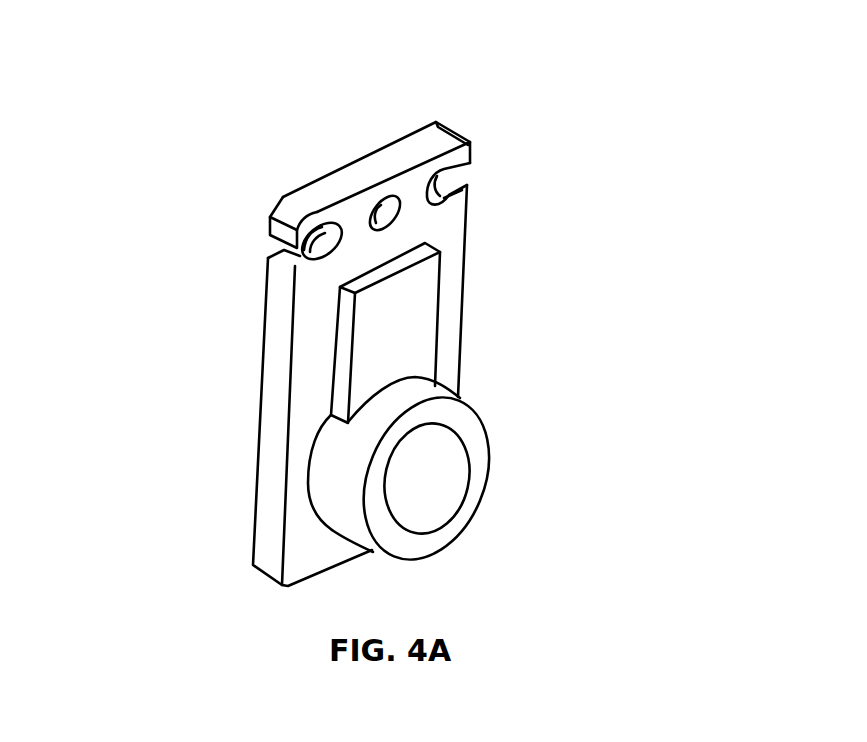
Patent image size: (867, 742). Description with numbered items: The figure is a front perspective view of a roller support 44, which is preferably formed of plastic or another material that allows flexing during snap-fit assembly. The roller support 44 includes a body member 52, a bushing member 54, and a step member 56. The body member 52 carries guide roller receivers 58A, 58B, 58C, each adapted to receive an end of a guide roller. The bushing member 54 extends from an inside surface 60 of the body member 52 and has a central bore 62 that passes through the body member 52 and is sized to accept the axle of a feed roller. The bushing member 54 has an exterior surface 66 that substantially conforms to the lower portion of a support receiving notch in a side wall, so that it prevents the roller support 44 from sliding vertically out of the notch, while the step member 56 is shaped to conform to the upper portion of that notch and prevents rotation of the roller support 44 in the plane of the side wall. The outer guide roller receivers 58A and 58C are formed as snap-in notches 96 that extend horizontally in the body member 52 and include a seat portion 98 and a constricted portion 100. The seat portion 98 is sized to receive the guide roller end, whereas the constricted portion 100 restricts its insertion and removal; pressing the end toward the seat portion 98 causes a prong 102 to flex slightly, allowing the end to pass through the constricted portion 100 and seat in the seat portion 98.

The roller support 44 is at (250, 106).
The body member 52 is at (268, 402).
The bushing member 54 is at (483, 432).
The step member 56 is at (398, 338).
The guide roller receiver 58A is at (245, 238).
The guide roller receiver 58B is at (387, 218).
The guide roller receiver 58C is at (514, 144).
The inside surface 60 is at (457, 292).
The central bore 62 is at (427, 502).
The exterior surface 66 is at (347, 490).
The snap-in notch 96 is at (385, 182).
The seat portion 98 is at (327, 260).
The constricted portion 100 is at (272, 256).
The prong 102 is at (278, 208).